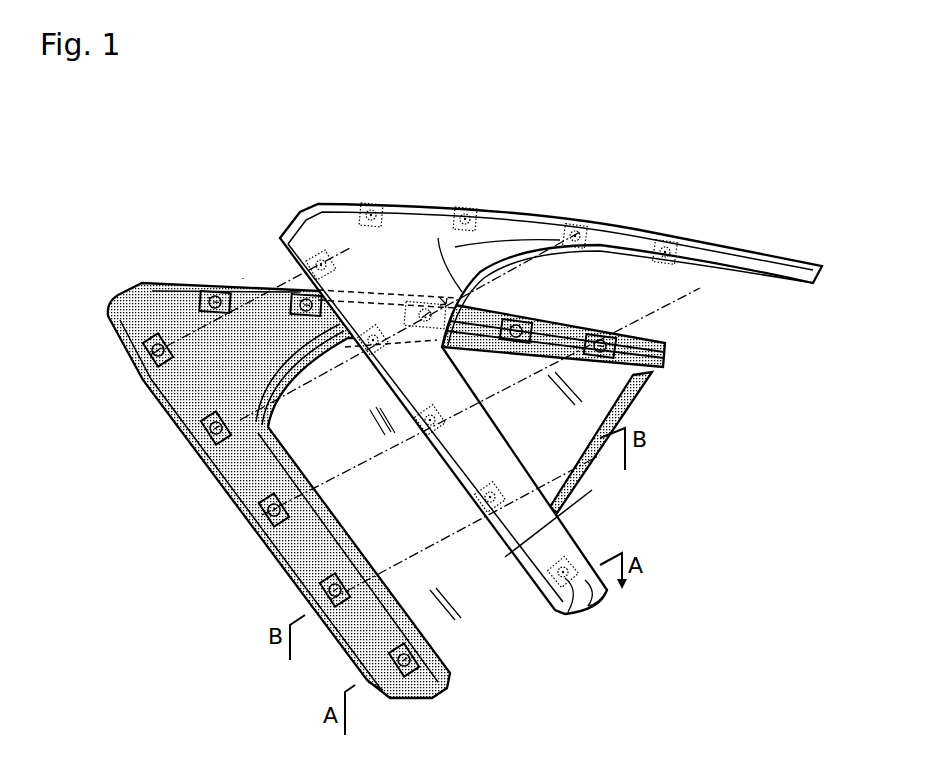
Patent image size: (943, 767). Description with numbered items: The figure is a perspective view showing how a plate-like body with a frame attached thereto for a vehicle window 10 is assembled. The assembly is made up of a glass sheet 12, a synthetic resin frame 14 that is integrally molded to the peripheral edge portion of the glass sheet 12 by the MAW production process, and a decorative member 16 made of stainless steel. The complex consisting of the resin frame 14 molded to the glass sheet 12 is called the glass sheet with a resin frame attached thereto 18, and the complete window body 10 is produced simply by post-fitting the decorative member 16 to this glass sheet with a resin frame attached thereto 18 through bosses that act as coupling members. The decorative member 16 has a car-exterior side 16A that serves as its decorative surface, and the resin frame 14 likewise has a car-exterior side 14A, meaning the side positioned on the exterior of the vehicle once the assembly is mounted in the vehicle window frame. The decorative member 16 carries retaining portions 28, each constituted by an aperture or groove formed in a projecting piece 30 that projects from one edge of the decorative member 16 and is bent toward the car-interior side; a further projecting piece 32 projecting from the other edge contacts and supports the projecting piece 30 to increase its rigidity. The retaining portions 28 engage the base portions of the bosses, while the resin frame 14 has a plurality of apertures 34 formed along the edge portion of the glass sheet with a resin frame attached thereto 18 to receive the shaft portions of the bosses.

The plate-like body with a frame attached thereto for a vehicle window 10 is at (637, 180).
The glass sheet 12 is at (602, 385).
The synthetic resin frame 14 is at (178, 305).
The car-exterior side 14A is at (173, 387).
The decorative member 16 is at (430, 226).
The car-exterior side 16A is at (345, 240).
The glass sheet with a resin frame attached thereto 18 is at (243, 278).
The retaining portion 28 is at (480, 212).
The projecting piece 30 is at (396, 210).
The projecting piece 32 is at (608, 598).
The aperture 34 is at (150, 360).